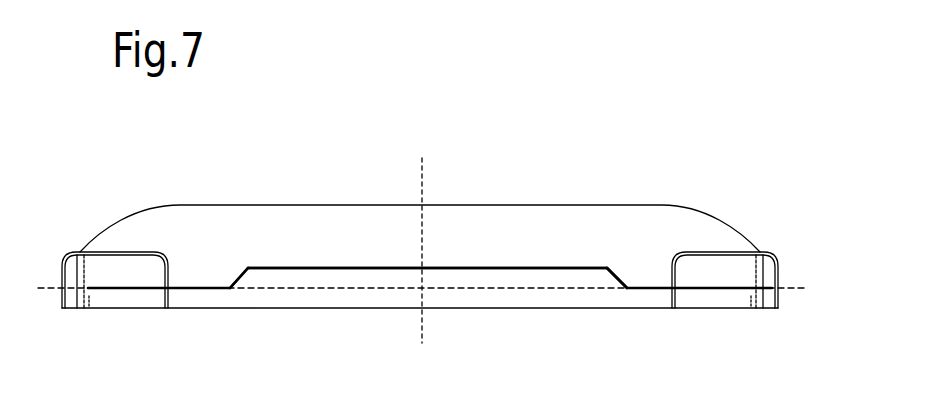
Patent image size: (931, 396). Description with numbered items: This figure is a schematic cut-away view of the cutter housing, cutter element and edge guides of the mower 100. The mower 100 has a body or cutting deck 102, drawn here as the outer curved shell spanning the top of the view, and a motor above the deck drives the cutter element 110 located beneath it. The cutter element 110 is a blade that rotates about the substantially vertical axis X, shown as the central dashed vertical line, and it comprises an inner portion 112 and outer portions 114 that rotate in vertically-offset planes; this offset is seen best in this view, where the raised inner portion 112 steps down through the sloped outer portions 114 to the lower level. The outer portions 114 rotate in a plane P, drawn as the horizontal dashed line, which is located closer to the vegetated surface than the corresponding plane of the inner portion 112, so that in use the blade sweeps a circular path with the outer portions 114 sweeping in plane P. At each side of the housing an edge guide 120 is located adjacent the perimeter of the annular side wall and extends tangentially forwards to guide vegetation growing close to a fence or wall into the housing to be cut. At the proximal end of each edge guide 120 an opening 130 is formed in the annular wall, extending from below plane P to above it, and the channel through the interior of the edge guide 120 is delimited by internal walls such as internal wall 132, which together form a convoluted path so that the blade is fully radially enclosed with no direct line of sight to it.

The mower 100 is at (582, 175).
The cutting deck 102 is at (273, 223).
The cutter element 110 is at (500, 269).
The inner portion 112 is at (357, 266).
The outer portion 114 is at (213, 287).
The edge guide 120 is at (122, 322).
The opening 130 is at (88, 250).
The internal wall 132 is at (125, 263).
The plane P is at (46, 289).
The axis X is at (422, 252).